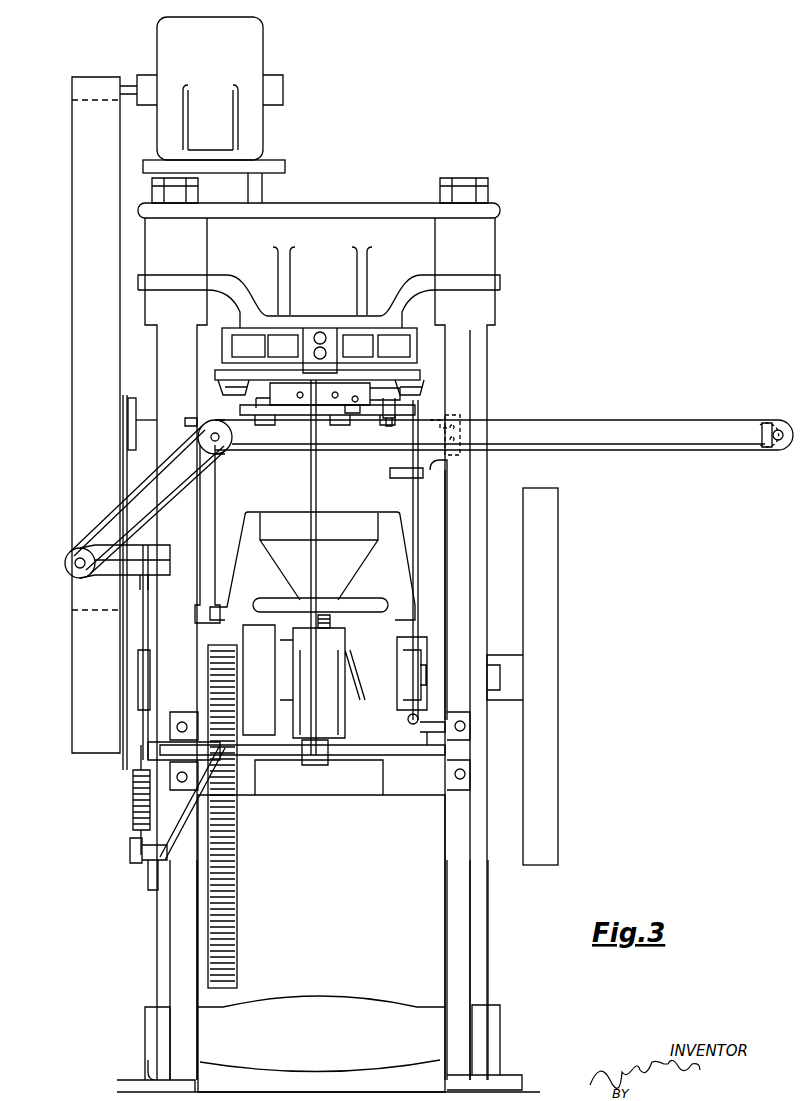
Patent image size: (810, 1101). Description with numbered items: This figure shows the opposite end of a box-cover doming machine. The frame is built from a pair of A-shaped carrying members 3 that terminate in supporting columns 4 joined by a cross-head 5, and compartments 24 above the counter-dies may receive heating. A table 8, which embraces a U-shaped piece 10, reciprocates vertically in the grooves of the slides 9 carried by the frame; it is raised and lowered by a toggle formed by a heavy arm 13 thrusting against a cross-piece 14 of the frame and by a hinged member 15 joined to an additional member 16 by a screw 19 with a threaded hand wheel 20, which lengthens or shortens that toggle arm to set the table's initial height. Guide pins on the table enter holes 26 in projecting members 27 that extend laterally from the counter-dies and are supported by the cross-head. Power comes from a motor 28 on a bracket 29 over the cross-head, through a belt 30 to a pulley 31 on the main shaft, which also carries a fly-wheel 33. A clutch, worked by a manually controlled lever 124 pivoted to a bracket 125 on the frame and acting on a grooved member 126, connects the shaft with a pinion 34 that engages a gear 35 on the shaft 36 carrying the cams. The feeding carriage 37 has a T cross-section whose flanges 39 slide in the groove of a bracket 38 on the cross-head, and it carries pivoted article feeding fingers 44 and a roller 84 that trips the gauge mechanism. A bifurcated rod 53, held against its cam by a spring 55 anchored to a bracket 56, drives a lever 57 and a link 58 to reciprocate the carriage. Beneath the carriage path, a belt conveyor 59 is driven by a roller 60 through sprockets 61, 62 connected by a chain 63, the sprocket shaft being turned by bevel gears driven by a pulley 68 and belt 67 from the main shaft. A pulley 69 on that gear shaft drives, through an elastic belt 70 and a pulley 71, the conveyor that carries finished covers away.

The A-shaped carrying member 3 is at (175, 950).
The supporting column 4 is at (155, 374).
The cross-head 5 is at (393, 203).
The table 8 is at (398, 475).
The slide 9 is at (210, 537).
The U-shaped piece 10 is at (240, 530).
The heavy arm 13 is at (375, 935).
The cross-piece 14 is at (148, 1038).
The member 15 is at (336, 640).
The member 16 is at (365, 545).
The screw 19 is at (330, 620).
The hand wheel 20 is at (290, 600).
The compartment 24 is at (395, 338).
The hole 26 is at (220, 390).
The projecting member 27 is at (222, 376).
The motor 28 is at (158, 42).
The bracket 29 is at (147, 160).
The belt 30 is at (72, 370).
The pulley 31 is at (85, 605).
The fly-wheel 33 is at (545, 672).
The pinion 34 is at (222, 648).
The gear 35 is at (237, 948).
The shaft 36 is at (130, 848).
The carriage 37 is at (394, 346).
The bracket 38 is at (358, 346).
The flange 39 is at (283, 346).
The article feeding finger 44 is at (355, 425).
The bifurcated rod 53 is at (150, 860).
The spring 55 is at (133, 802).
The bracket 56 is at (182, 715).
The lever 57 is at (312, 493).
The link 58 is at (318, 395).
The belt conveyor 59 is at (655, 450).
The roller 60 is at (198, 433).
The sprocket 61 is at (199, 423).
The sprocket 62 is at (72, 553).
The chain 63 is at (110, 520).
The belt 67 is at (143, 632).
The pulley 68 is at (143, 680).
The pulley 69 is at (130, 592).
The belt 70 is at (130, 455).
The pulley 71 is at (128, 405).
The roller 84 is at (392, 416).
The lever 124 is at (413, 510).
The bracket 125 is at (433, 730).
The grooved member 126 is at (430, 650).